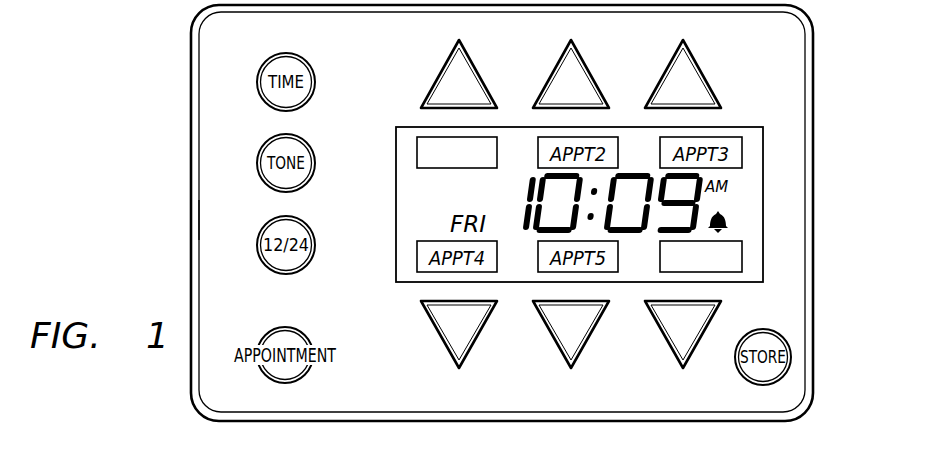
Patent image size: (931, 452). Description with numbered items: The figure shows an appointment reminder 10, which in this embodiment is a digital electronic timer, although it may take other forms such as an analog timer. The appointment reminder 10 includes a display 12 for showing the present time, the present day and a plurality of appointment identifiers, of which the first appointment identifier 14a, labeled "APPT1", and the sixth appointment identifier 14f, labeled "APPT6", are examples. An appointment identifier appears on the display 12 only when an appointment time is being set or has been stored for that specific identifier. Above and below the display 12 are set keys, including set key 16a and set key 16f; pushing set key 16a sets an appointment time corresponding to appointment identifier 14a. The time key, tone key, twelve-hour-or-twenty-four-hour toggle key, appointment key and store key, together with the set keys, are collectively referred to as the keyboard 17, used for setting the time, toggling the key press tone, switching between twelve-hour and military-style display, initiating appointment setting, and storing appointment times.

The appointment reminder 10 is at (815, 64).
The display 12 is at (747, 135).
The appointment identifier 14a is at (417, 150).
The appointment identifier 14f is at (735, 273).
The set key 16a is at (441, 72).
The set key 16f is at (662, 340).
The keyboard 17 is at (216, 220).